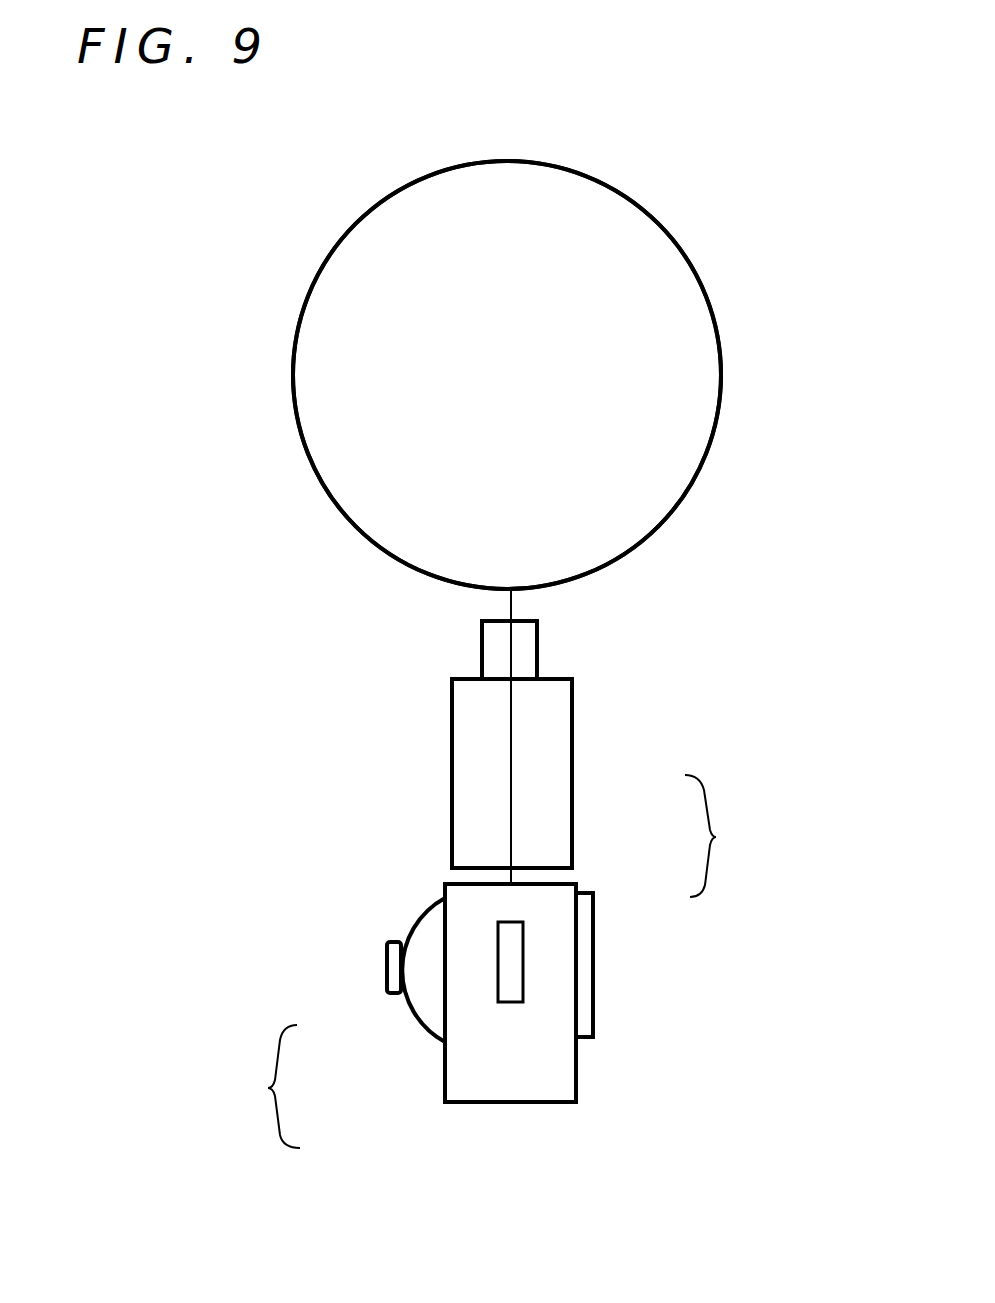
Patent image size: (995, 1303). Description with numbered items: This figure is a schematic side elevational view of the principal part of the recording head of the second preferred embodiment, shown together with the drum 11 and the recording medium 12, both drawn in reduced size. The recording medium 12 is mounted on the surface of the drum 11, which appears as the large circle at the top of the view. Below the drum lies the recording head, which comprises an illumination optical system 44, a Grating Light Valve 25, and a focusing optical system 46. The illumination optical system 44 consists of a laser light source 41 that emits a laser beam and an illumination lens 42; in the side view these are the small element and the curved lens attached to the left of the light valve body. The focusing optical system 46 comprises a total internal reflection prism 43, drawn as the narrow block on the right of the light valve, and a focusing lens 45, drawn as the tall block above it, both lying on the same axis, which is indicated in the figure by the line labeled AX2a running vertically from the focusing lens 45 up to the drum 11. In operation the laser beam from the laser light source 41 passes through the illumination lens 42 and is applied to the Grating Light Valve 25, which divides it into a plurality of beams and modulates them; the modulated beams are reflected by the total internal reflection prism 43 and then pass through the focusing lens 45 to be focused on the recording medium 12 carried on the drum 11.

The drum 11 is at (632, 525).
The recording medium 12 is at (710, 450).
The Grating Light Valve 25 is at (565, 1065).
The laser light source 41 is at (392, 968).
The illumination lens 42 is at (433, 1015).
The total internal reflection prism 43 is at (582, 920).
The illumination optical system 44 is at (250, 1086).
The focusing lens 45 is at (557, 778).
The focusing optical system 46 is at (734, 836).
The rotation axis AX2a is at (512, 784).